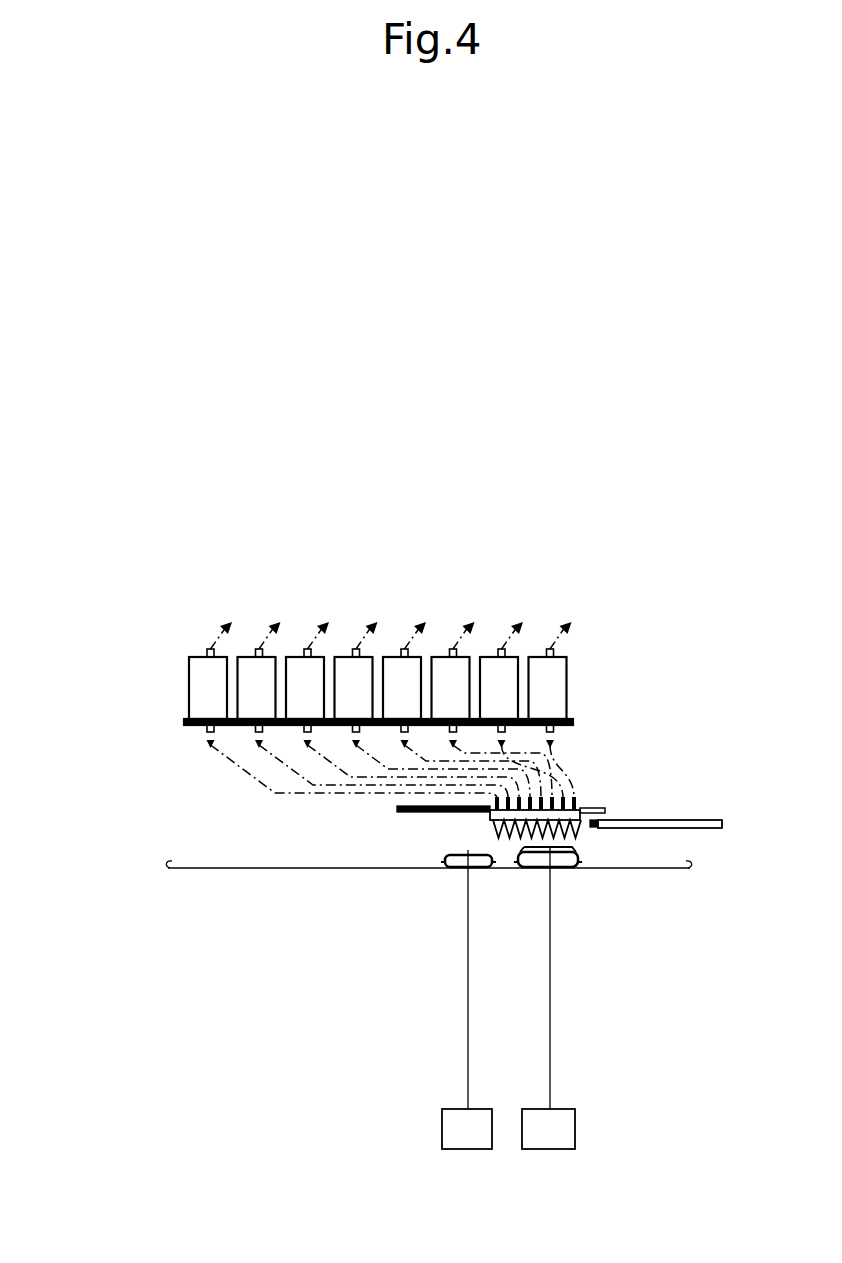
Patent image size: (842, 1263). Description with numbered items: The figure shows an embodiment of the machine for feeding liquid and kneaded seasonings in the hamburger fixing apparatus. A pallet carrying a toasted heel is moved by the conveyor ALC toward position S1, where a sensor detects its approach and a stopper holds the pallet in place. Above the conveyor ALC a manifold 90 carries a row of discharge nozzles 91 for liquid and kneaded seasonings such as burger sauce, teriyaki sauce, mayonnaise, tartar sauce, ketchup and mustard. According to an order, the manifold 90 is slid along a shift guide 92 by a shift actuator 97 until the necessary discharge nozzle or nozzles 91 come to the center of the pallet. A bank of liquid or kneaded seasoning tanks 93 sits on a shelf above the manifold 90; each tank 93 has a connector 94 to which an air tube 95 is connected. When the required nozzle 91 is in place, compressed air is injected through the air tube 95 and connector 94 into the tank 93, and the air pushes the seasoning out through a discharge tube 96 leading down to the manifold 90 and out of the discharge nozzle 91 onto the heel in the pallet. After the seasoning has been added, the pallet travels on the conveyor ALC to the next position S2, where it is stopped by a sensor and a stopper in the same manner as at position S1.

The manifold 90 is at (575, 802).
The discharge nozzle 91 is at (578, 832).
The shift guide 92 is at (605, 810).
The liquid or kneaded seasoning tank 93 is at (547, 677).
The connector 94 is at (449, 655).
The air tube 95 is at (463, 640).
The discharge tube 96 is at (545, 760).
The shift actuator 97 is at (700, 830).
The conveyor ALC is at (205, 868).
The position S1 is at (468, 999).
The position S2 is at (548, 998).